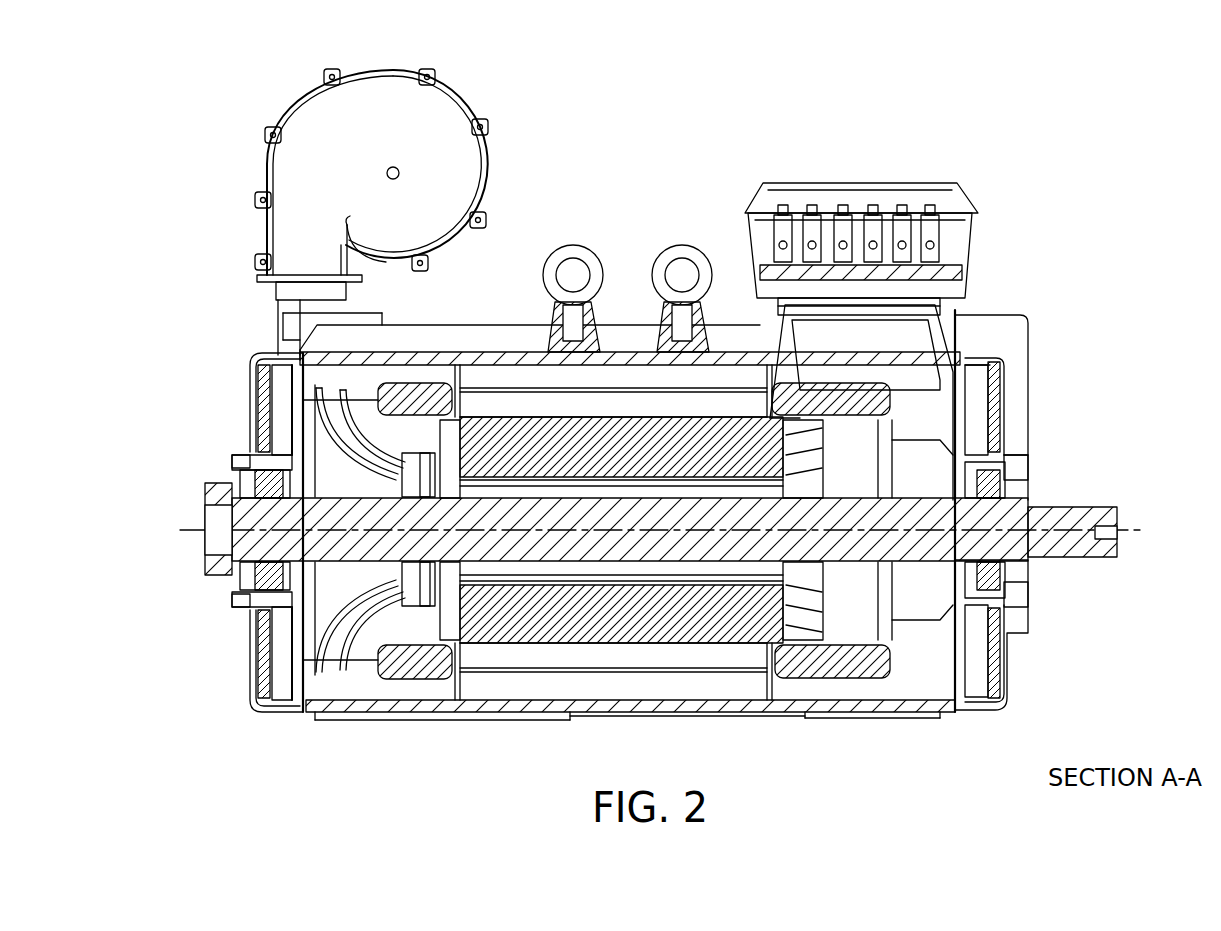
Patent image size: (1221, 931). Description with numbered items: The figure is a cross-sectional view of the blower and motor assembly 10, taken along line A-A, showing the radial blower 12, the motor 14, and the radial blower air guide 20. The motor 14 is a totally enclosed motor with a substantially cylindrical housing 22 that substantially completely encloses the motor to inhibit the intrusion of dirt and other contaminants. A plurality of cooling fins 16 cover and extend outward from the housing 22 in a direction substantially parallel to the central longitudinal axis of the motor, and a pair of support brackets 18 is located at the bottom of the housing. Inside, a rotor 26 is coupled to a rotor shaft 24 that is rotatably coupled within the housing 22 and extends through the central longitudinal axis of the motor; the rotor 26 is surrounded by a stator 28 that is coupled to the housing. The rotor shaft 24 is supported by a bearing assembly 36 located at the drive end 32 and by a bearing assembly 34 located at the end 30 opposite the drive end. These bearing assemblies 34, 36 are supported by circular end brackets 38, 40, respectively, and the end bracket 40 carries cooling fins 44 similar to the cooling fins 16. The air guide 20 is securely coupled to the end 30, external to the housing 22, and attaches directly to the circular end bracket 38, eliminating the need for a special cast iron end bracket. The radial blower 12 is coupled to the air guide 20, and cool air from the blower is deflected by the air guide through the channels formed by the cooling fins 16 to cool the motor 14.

The blower and motor assembly 10 is at (1030, 101).
The radial blower 12 is at (394, 60).
The motor 14 is at (623, 318).
The cooling fins 16 is at (476, 335).
The support brackets 18 is at (930, 722).
The radial blower air guide 20 is at (276, 313).
The housing 22 is at (413, 352).
The rotor shaft 24 is at (1083, 522).
The rotor 26 is at (547, 620).
The stator 28 is at (809, 668).
The end opposite drive end 30 is at (234, 636).
The drive end 32 is at (1042, 424).
The bearing assembly 34 is at (268, 505).
The bearing assembly 36 is at (1000, 580).
The circular end bracket 38 is at (262, 668).
The circular end bracket 40 is at (992, 680).
The cooling fins 44 is at (1010, 360).